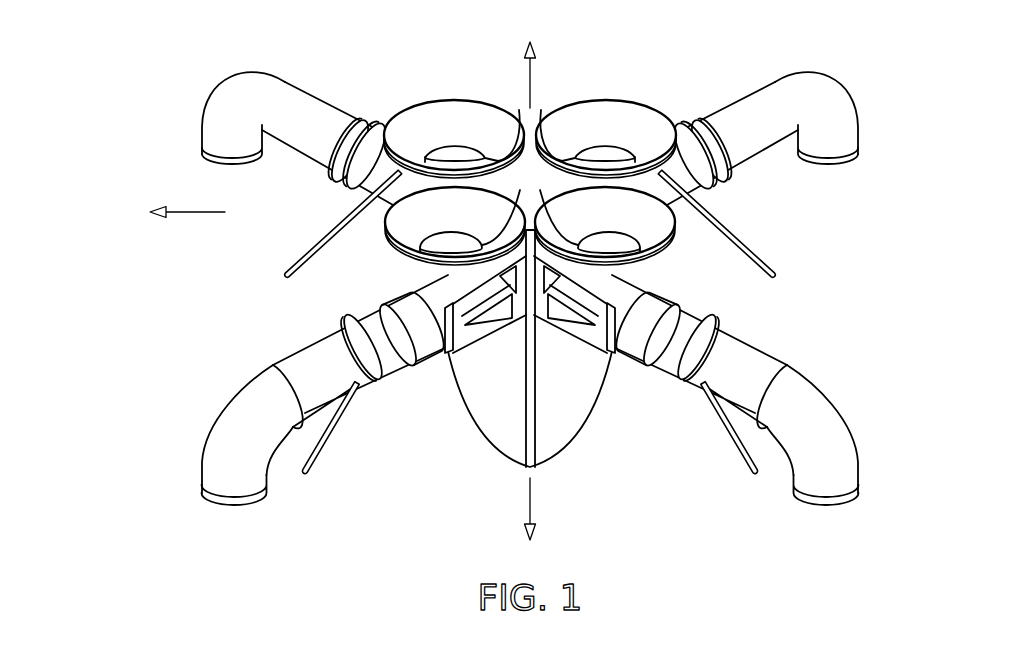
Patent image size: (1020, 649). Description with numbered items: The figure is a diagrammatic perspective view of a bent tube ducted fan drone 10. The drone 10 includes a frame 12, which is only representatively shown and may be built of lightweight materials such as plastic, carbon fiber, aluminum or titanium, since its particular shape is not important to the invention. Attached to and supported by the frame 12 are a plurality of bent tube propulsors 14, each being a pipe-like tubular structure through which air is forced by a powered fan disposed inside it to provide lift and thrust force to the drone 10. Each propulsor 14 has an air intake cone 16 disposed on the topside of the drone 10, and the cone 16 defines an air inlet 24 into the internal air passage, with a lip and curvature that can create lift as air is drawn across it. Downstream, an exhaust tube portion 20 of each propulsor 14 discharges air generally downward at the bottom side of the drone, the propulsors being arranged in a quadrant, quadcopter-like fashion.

The ducted fan drone 10 is at (160, 138).
The frame 12 is at (630, 365).
The bent tube propulsor 14 is at (532, 261).
The air intake cone 16 is at (437, 115).
The exhaust tube portion 20 is at (305, 143).
The air inlet 24 is at (450, 223).